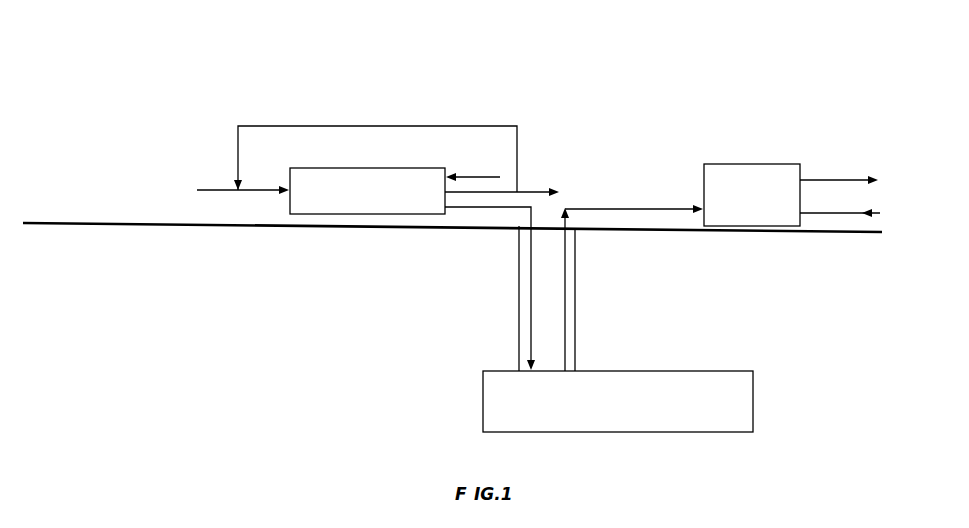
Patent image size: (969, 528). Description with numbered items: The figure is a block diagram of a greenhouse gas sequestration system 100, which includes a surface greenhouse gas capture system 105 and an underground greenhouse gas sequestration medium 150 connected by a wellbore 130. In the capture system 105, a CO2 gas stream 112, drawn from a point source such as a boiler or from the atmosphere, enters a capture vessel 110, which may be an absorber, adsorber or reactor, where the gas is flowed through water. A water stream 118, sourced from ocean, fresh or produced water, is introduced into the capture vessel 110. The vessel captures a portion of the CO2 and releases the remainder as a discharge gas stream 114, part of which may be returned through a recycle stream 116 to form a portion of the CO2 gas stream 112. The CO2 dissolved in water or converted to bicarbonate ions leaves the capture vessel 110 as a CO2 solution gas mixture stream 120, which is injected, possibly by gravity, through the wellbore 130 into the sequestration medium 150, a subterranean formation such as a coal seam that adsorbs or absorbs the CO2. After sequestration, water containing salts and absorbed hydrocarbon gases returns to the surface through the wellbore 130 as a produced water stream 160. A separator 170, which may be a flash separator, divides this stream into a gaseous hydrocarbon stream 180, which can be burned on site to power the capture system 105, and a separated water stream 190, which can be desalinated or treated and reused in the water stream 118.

The greenhouse gas sequestration system 100 is at (858, 72).
The greenhouse gas capture system 105 is at (100, 141).
The capture vessel 110 is at (333, 214).
The CO2 gas stream 112 is at (197, 190).
The discharge gas stream 114 is at (540, 190).
The recycle stream 116 is at (443, 126).
The water stream 118 is at (470, 177).
The CO2 solution gas mixture stream 120 is at (529, 297).
The wellbore 130 is at (519, 262).
The greenhouse gas sequestration medium 150 is at (753, 383).
The produced water stream 160 is at (670, 208).
The separator 170 is at (763, 163).
The gaseous hydrocarbon stream 180 is at (856, 213).
The separated water stream 190 is at (837, 180).